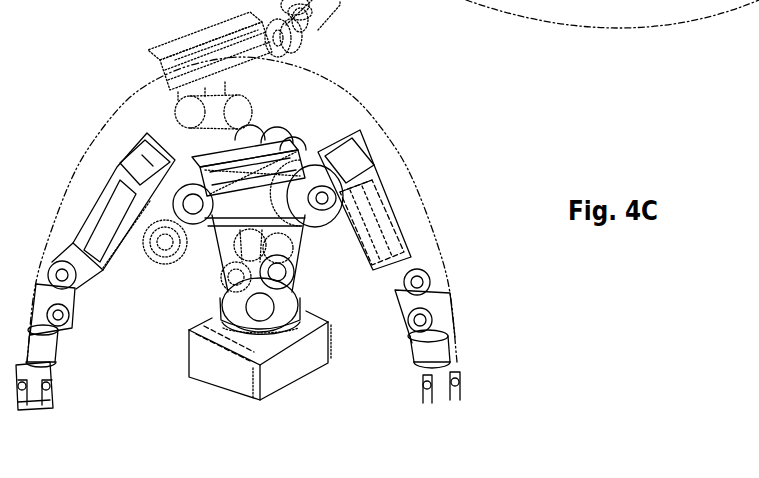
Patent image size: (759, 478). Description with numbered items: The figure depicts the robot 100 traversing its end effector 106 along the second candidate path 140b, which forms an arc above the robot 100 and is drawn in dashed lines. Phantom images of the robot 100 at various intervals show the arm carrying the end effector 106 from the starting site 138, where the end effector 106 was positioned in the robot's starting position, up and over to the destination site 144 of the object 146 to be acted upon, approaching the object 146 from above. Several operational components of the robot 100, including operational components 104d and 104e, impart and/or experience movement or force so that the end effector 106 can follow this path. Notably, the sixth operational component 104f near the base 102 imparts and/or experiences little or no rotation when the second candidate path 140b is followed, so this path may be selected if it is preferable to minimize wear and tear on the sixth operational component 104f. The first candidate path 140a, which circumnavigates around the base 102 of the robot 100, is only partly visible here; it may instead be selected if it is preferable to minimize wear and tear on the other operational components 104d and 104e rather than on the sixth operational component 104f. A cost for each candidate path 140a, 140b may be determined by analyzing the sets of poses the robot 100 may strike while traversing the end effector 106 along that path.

The robot 100 is at (157, 40).
The base 102 is at (216, 362).
The operational component 104d is at (243, 103).
The operational component 104e is at (274, 276).
The sixth operational component 104f is at (268, 332).
The end effector 106 is at (316, 0).
The starting site 138 is at (455, 438).
The first candidate path 140a is at (490, 0).
The second candidate path 140b is at (386, 136).
The destination site 144 is at (95, 287).
The object 146 is at (43, 403).